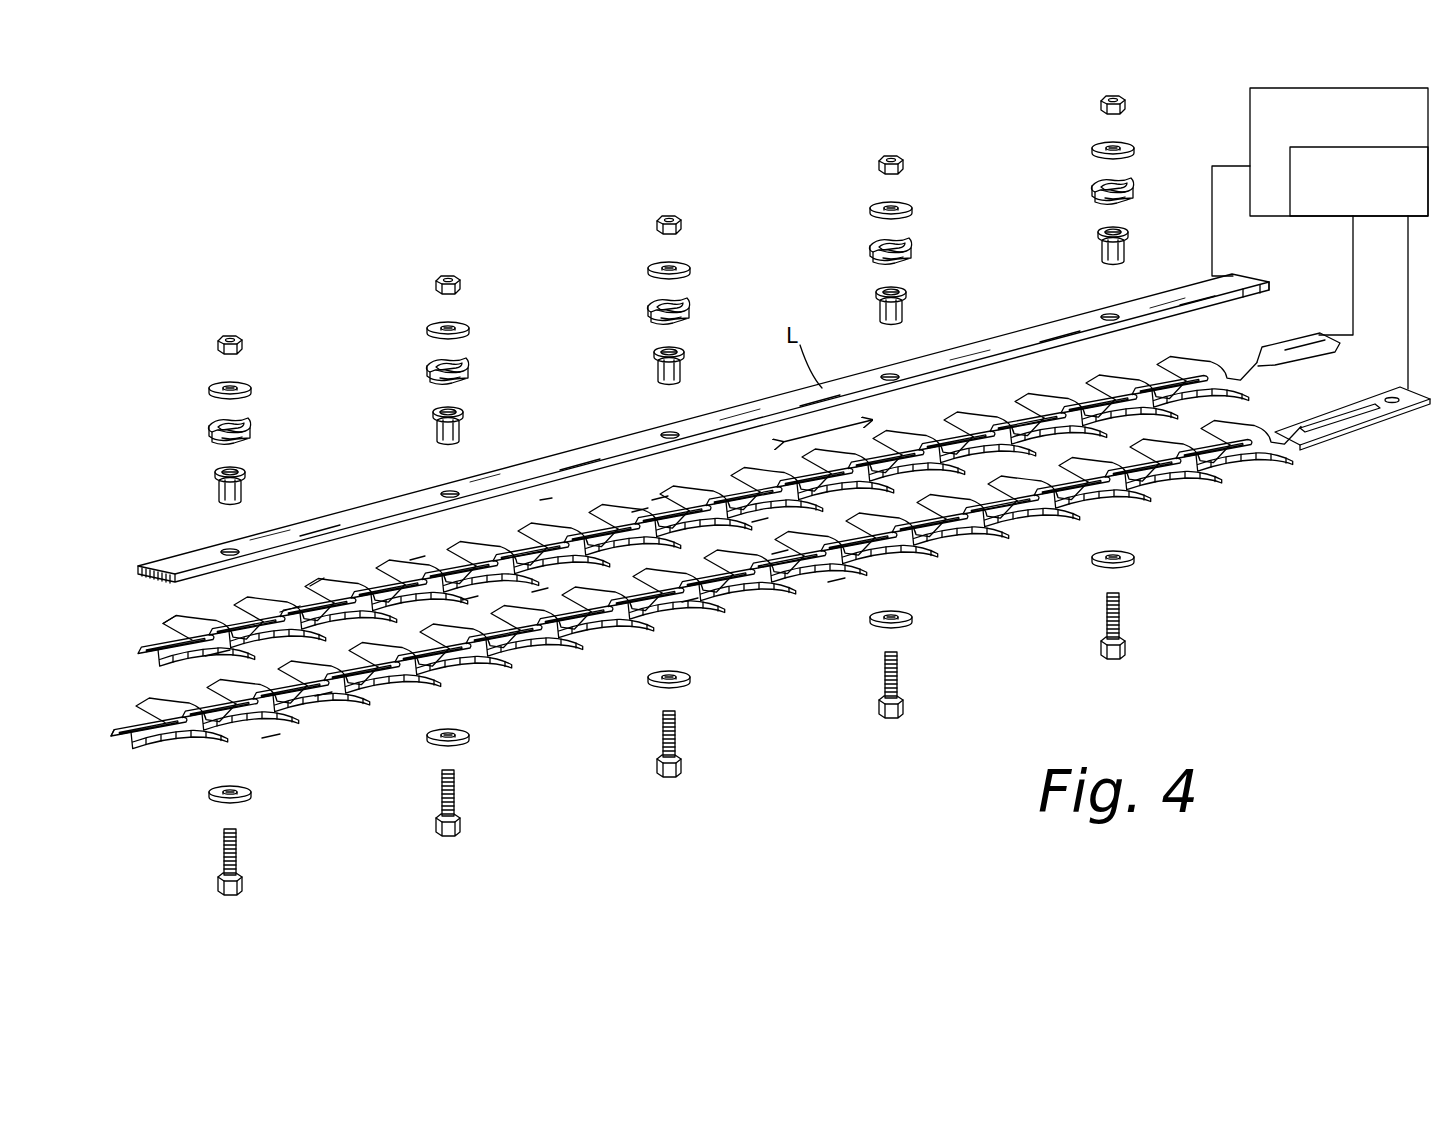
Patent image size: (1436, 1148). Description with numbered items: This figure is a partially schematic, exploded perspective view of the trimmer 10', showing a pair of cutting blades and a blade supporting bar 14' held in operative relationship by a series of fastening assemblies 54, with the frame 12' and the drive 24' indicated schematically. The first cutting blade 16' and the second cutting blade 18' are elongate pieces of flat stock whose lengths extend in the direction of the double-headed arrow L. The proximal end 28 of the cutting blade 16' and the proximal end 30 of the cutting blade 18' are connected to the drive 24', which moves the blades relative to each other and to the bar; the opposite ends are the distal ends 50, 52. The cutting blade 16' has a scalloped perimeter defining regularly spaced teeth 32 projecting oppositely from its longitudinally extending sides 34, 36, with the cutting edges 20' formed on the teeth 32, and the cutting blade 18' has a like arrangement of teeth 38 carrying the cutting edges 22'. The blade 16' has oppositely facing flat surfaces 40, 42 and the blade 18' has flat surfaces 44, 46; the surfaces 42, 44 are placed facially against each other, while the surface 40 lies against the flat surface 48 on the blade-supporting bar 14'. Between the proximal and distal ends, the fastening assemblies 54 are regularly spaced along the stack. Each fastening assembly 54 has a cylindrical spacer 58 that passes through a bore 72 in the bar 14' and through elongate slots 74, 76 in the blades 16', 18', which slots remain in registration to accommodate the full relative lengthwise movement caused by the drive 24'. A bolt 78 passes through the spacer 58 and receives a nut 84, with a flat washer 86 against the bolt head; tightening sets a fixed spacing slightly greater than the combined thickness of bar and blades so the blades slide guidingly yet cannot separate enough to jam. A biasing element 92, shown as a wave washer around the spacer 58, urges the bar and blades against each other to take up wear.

The trimmer 10' is at (770, 455).
The frame 12' is at (1320, 182).
The blade supporting bar 14' is at (703, 428).
The cutting blade 16' is at (732, 502).
The cutting blade 18' is at (770, 599).
The cutting edges 20' is at (674, 448).
The cutting edges 22' is at (848, 615).
The drive 24' is at (1359, 267).
The proximal end 28 is at (1282, 332).
The proximal end 30 is at (1338, 436).
The teeth 32 is at (470, 600).
The longitudinally extending side 34 is at (322, 578).
The longitudinally extending side 36 is at (540, 592).
The teeth 38 is at (780, 552).
The flat surface 40 is at (290, 612).
The flat surface 42 is at (212, 660).
The flat surface 44 is at (322, 695).
The flat surface 46 is at (270, 738).
The flat surface 48 is at (545, 500).
The distal end 50 is at (158, 636).
The distal end 52 is at (165, 736).
The fastening assemblies 54 is at (266, 375).
The cylindrical spacer 58 is at (216, 472).
The bore 72 is at (226, 548).
The elongate slot 74 is at (660, 500).
The elongate slot 76 is at (690, 600).
The bolt 78 is at (218, 862).
The nut 84 is at (222, 338).
The flat washer 86 is at (215, 800).
The biasing element 92 is at (212, 425).